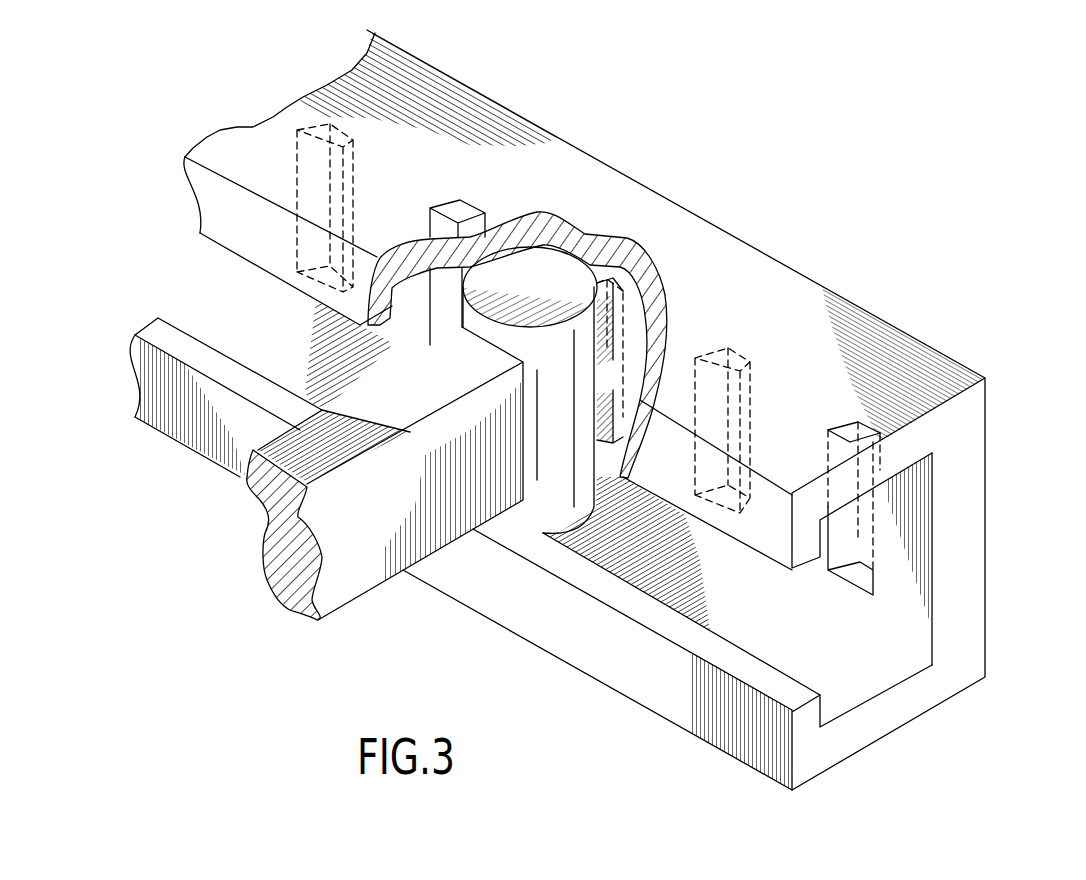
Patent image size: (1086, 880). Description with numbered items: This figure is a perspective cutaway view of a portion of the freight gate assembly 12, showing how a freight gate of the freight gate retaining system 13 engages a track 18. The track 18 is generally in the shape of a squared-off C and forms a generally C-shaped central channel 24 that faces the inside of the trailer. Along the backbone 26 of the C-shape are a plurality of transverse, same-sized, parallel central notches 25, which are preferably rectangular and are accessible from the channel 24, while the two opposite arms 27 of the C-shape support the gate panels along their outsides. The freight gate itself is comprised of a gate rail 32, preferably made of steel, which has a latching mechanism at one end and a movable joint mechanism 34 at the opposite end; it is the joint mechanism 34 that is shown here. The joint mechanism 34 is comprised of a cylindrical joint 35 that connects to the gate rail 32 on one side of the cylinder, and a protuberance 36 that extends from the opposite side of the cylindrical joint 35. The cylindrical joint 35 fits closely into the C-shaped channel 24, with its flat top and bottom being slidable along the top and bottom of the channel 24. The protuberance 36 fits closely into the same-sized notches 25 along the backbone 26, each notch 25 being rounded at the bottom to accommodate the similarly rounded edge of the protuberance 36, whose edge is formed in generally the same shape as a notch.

The base body 12 is at (888, 284).
The freight gate retaining system 13 is at (245, 563).
The track 18 is at (770, 278).
The central channel 24 is at (850, 668).
The central notches 25 is at (432, 222).
The backbone 26 is at (918, 543).
The arms 27 is at (770, 513).
The gate rail 32 is at (375, 523).
The joint mechanism 34 is at (612, 240).
The cylindrical joint 35 is at (570, 437).
The protuberance 36 is at (628, 425).